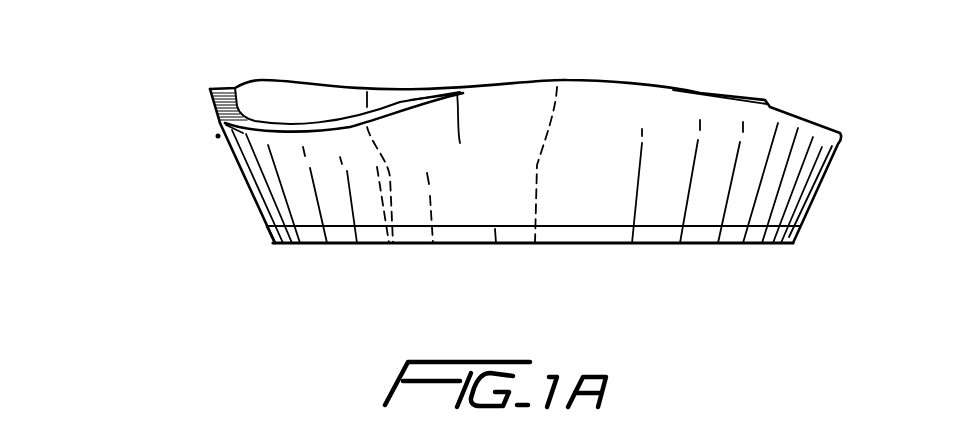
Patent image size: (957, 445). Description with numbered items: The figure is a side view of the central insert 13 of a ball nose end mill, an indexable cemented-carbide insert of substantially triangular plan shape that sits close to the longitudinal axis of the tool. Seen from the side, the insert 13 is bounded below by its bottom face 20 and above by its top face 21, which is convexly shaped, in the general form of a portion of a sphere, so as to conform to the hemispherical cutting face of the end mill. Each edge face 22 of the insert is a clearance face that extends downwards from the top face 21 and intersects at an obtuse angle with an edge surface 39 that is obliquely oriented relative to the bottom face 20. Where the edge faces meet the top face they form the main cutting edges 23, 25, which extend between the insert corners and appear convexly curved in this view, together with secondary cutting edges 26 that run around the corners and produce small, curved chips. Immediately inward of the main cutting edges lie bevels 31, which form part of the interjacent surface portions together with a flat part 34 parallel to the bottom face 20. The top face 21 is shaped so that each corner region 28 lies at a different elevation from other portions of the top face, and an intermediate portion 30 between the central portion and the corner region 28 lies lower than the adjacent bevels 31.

The central insert 13 is at (622, 68).
The bottom face 20 is at (583, 248).
The top face 21 is at (353, 97).
The edge face 22 is at (247, 187).
The main cutting edge 23 is at (210, 90).
The main cutting edge 25 is at (447, 133).
The secondary cutting edge 26 is at (233, 160).
The corner region 28 is at (216, 137).
The intermediate portion 30 is at (317, 100).
The bevel 31 is at (420, 100).
The flat part 34 is at (281, 82).
The edge surface 39 is at (273, 236).